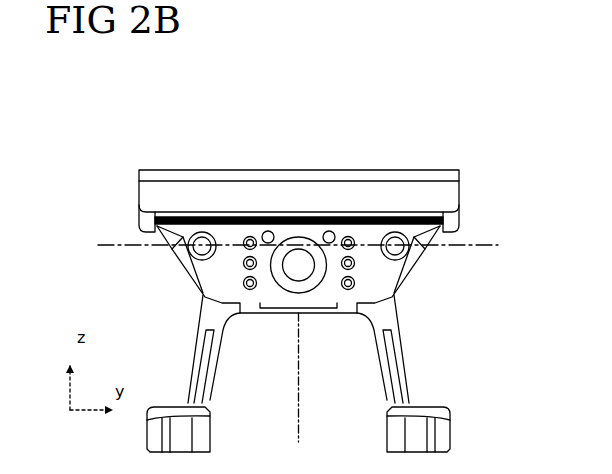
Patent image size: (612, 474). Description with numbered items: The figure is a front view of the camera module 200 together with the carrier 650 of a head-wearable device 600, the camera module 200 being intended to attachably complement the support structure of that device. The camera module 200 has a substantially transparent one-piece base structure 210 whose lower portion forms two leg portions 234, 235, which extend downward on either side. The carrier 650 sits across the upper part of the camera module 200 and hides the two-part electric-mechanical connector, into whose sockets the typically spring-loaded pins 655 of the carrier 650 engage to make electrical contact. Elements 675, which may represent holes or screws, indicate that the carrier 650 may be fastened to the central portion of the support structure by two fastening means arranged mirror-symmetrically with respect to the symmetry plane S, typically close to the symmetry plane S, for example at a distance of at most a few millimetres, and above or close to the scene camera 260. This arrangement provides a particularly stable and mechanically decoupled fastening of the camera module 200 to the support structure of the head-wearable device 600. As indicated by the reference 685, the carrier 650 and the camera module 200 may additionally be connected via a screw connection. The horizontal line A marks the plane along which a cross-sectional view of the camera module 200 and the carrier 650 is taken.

The head-wearable device 600 is at (312, 76).
The camera module 200 is at (168, 166).
The one-piece base structure 210 is at (439, 166).
The scene camera 260 is at (300, 235).
The elements (holes or screws) 675 is at (268, 231).
The spring-loaded pins 655 is at (250, 292).
The screw connection 685 is at (171, 251).
The carrier 650 is at (387, 291).
The leg portion 234 is at (182, 366).
The leg portion 235 is at (439, 377).
The line A is at (115, 241).
The symmetry plane S is at (297, 418).